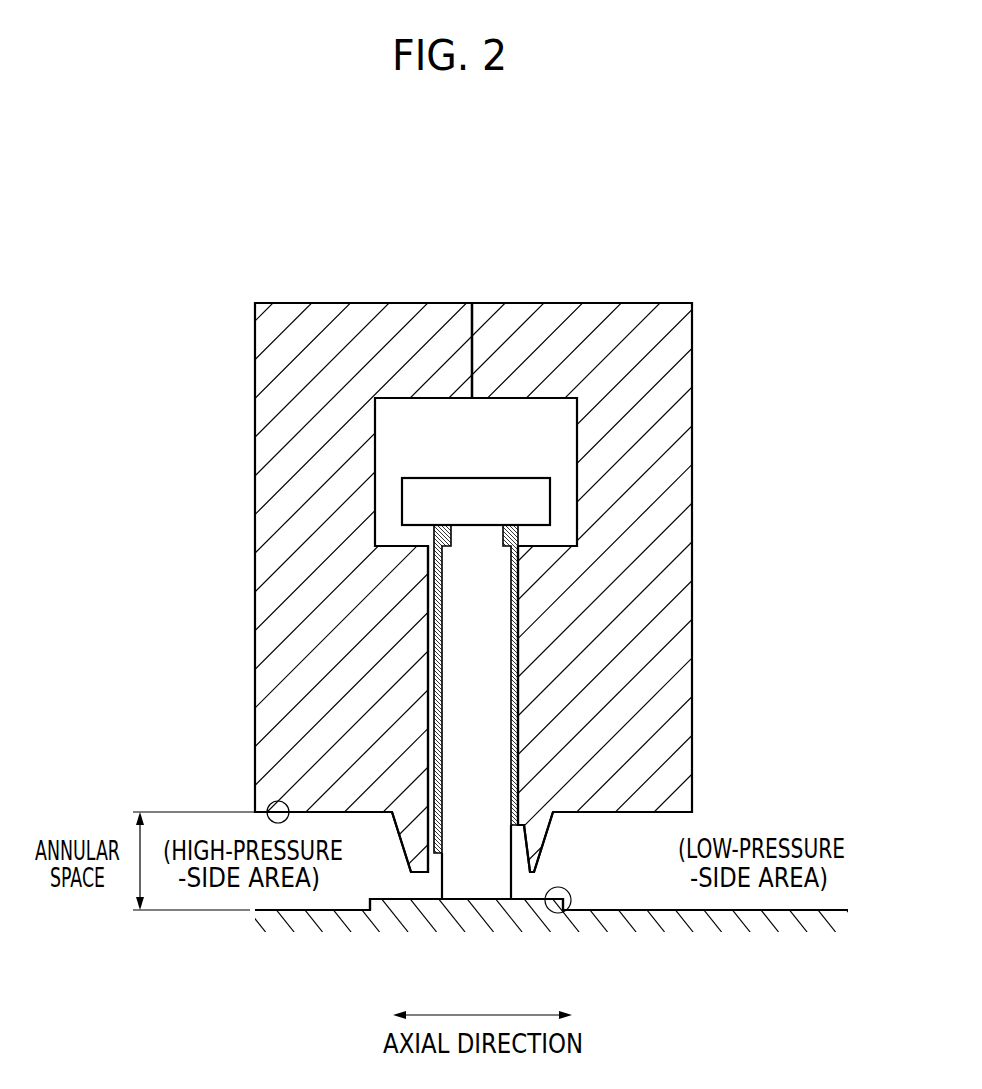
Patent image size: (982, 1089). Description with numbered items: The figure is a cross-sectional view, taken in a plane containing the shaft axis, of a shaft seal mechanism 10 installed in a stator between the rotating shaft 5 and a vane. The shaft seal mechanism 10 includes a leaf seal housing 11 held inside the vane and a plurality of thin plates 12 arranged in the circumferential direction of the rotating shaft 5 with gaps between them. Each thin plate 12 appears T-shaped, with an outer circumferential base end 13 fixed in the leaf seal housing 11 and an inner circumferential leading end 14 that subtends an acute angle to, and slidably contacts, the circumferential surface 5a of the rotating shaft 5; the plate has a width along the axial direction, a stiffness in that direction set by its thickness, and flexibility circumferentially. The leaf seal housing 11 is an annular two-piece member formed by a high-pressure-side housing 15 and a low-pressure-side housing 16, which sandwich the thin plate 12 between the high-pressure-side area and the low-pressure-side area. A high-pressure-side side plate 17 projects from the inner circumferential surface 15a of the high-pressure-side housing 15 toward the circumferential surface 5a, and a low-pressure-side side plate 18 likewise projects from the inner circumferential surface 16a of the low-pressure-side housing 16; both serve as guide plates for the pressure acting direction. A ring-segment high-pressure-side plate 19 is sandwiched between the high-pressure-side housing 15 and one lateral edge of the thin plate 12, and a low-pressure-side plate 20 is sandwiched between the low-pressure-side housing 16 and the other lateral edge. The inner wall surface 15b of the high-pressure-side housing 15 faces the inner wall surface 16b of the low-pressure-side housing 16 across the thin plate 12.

The rotating shaft 5 is at (376, 906).
The circumferential surface of the rotating shaft 5a is at (570, 913).
The shaft seal mechanism 10 is at (714, 228).
The leaf seal housing 11 is at (448, 315).
The thin plate 12 is at (489, 659).
The outer circumferential base end 13 is at (466, 493).
The inner circumferential leading end 14 is at (478, 900).
The high-pressure-side housing 15 is at (268, 617).
The inner circumferential surface of the high-pressure-side housing 15a is at (268, 803).
The inner wall surface of the high-pressure-side housing 15b is at (435, 688).
The low-pressure-side housing 16 is at (684, 640).
The inner circumferential surface of the low-pressure-side housing 16a is at (641, 814).
The inner wall surface of the low-pressure-side housing 16b is at (514, 585).
The high-pressure-side side plate 17 is at (408, 876).
The low-pressure-side side plate 18 is at (537, 832).
The high-pressure-side plate 19 is at (434, 590).
The low-pressure-side plate 20 is at (520, 625).